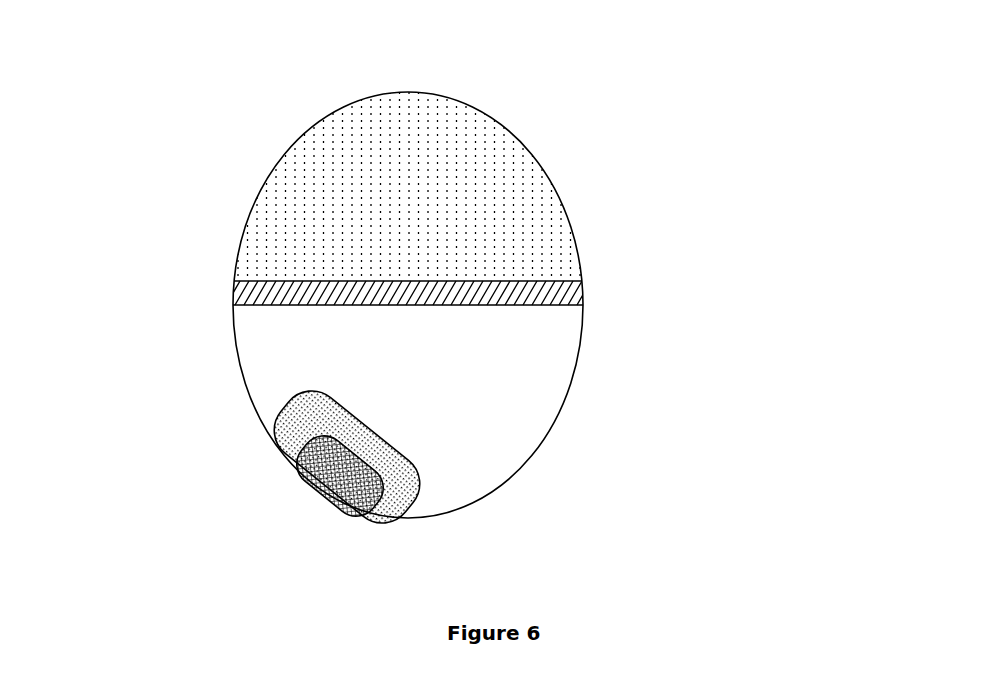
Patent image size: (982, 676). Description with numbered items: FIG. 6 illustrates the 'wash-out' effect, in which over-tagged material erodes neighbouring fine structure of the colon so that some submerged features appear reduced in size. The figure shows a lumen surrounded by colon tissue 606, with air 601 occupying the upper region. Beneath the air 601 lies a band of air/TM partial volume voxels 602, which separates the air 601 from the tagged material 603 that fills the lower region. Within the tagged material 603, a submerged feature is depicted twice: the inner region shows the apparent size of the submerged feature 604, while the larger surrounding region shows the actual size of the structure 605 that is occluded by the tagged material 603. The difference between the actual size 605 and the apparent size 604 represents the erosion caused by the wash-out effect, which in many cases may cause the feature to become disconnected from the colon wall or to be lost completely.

The air 601 is at (527, 211).
The air/TM partial volume voxels 602 is at (530, 294).
The tagged material 603 is at (532, 385).
The apparent size of a submerged feature 604 is at (340, 472).
The actual size of the structure 605 is at (320, 420).
The colon tissue 606 is at (217, 100).